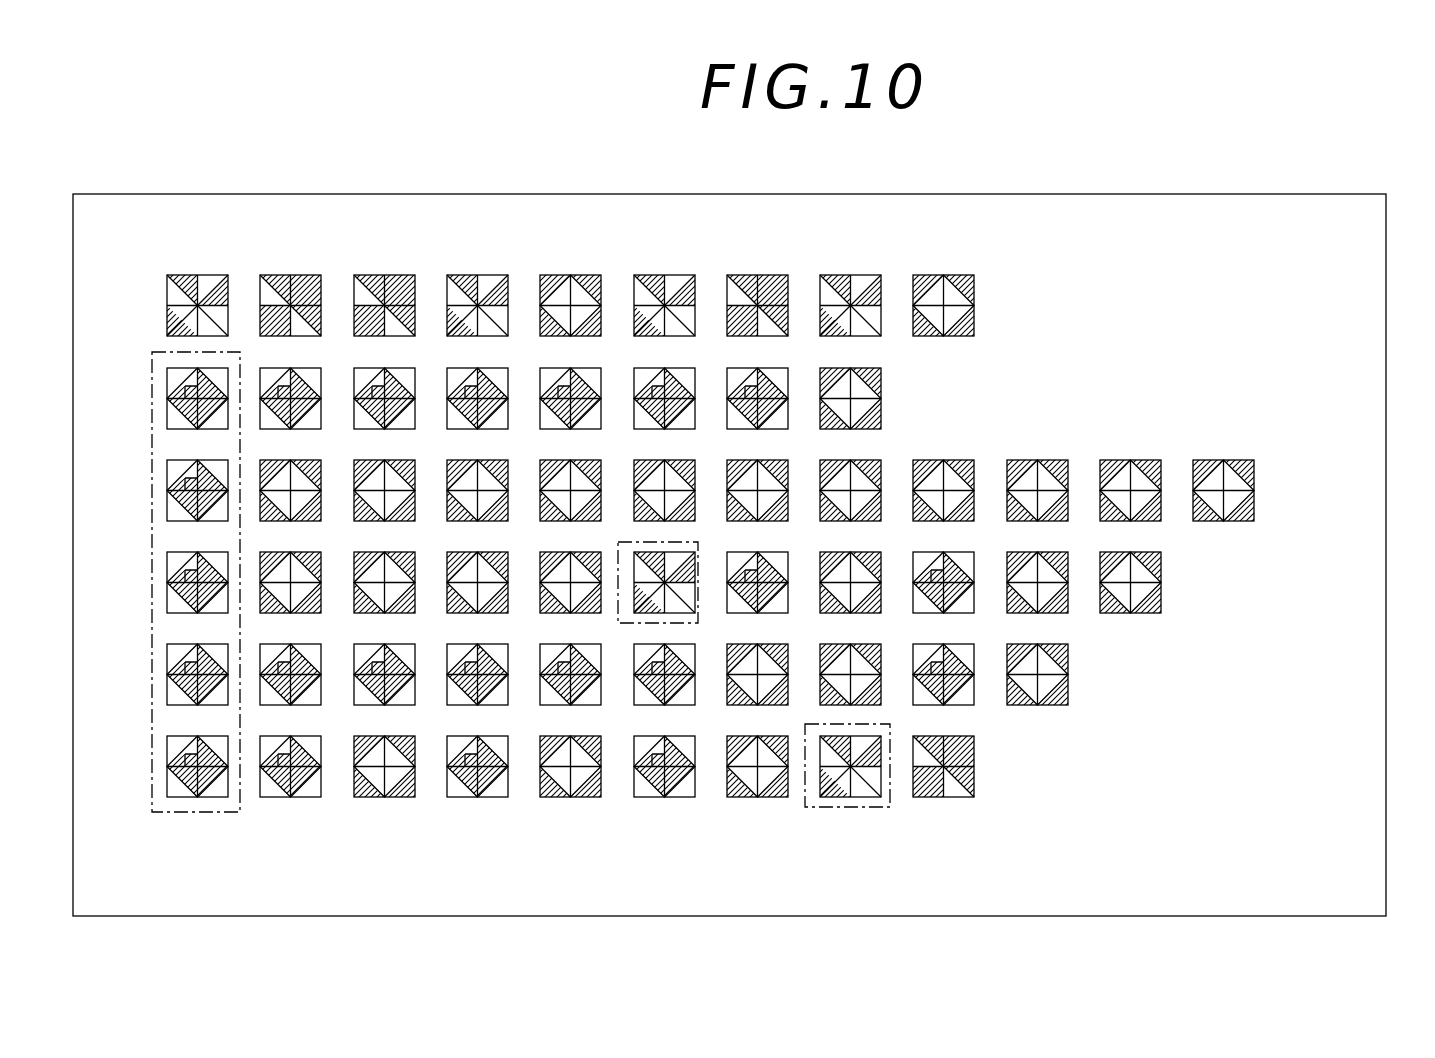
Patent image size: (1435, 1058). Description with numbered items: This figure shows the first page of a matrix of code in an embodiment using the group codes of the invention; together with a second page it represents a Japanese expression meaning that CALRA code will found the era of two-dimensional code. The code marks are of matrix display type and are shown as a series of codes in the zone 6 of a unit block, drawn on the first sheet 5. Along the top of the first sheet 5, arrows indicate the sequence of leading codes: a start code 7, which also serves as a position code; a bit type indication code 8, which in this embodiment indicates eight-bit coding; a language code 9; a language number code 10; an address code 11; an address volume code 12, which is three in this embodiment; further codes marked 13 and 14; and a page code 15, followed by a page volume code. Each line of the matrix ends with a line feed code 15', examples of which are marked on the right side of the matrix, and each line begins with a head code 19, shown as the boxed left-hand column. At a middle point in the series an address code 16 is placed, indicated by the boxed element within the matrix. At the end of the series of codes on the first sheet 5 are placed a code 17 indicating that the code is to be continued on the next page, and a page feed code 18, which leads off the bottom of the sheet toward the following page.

The first sheet 5 is at (1360, 557).
The zone 6 is at (1305, 702).
The start code 7 is at (206, 238).
The bit type indication code 8 is at (299, 238).
The language code 9 is at (393, 238).
The language number code 10 is at (485, 238).
The address code 11 is at (573, 238).
The address volume code 12 is at (667, 238).
The column signal line 13 is at (760, 238).
The column signal line 14 is at (853, 188).
The page code 15 is at (967, 230).
The line feed code 15' is at (1037, 509).
The address code 16 is at (698, 588).
The code indicating "to be continued on the next page" 17 is at (1078, 938).
The page feed code 18 is at (1140, 928).
The head code 19 is at (182, 812).